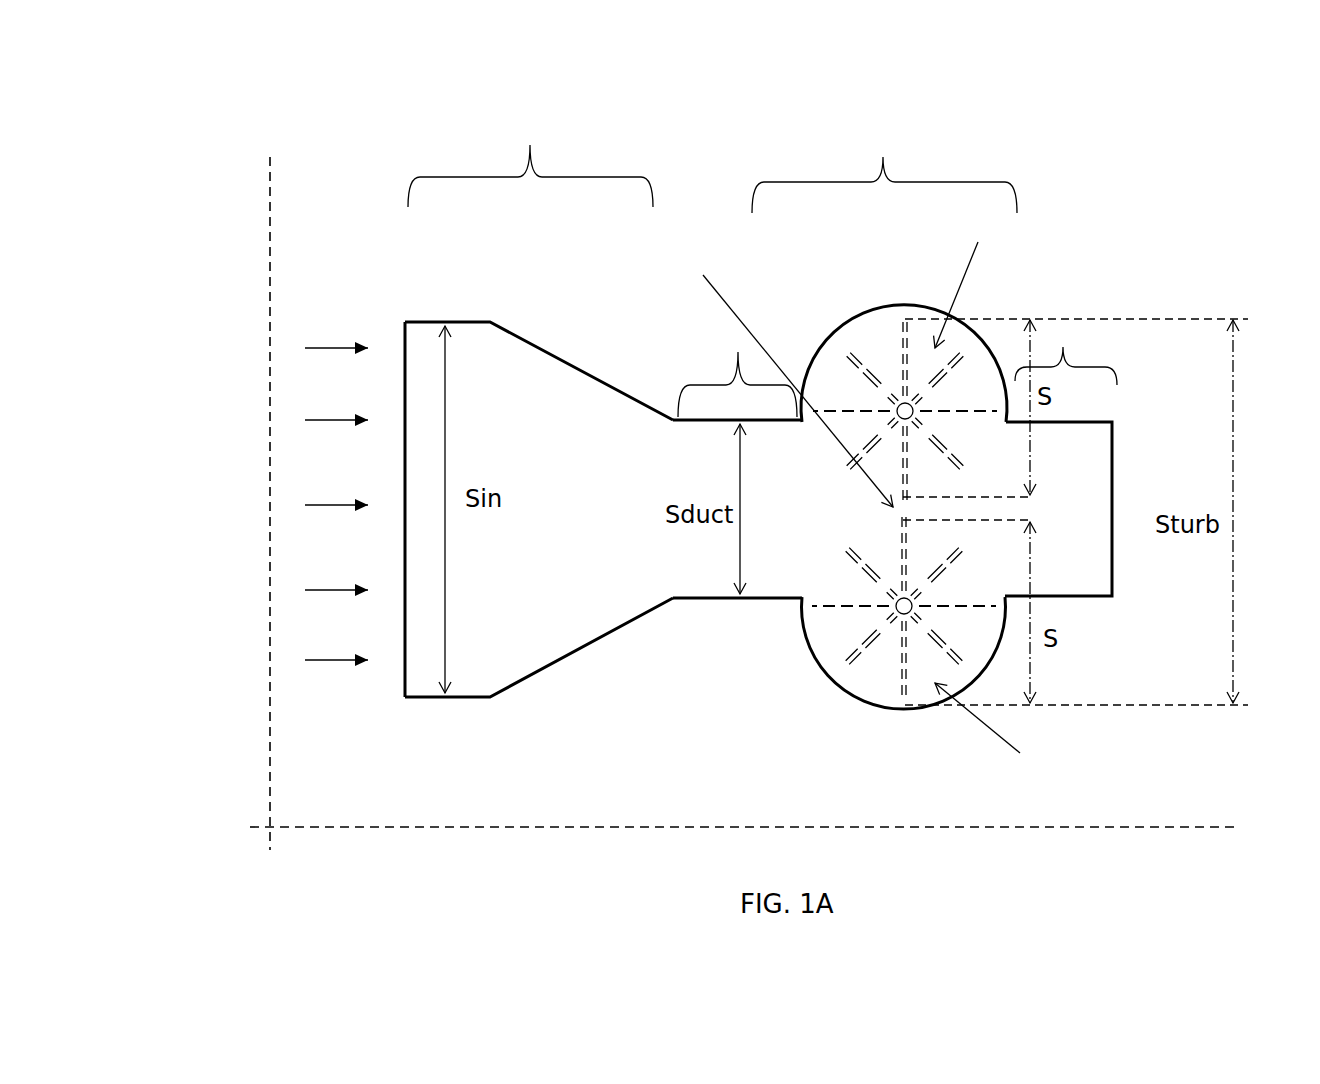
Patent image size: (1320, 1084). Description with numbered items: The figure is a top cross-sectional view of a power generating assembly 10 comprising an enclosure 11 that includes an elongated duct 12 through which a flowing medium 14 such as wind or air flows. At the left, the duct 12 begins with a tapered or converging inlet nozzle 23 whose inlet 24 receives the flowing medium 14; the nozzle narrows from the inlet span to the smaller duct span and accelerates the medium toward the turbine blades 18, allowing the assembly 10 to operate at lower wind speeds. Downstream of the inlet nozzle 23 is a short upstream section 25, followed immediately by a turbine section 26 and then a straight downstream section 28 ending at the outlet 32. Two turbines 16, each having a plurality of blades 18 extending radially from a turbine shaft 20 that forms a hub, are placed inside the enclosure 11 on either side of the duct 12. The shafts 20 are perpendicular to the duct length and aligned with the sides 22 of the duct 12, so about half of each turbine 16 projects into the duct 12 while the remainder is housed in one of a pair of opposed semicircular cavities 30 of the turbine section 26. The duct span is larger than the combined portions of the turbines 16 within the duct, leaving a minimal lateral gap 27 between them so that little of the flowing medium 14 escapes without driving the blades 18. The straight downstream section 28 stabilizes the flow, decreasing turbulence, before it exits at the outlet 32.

The power generating assembly 10 is at (307, 277).
The enclosure 11 is at (583, 643).
The elongated duct 12 is at (598, 373).
The flowing medium 14 is at (336, 504).
The turbines 16 is at (999, 502).
The blades 18 is at (958, 407).
The turbine shafts 20 is at (903, 400).
The sides of the duct 22 is at (700, 422).
The inlet nozzle 23 is at (530, 161).
The inlet 24 is at (403, 377).
The upstream section 25 is at (737, 372).
The turbine section 26 is at (884, 167).
The gap 27 is at (785, 373).
The downstream section 28 is at (1066, 349).
The semicircular cavities 30 is at (845, 322).
The outlet 32 is at (1108, 520).